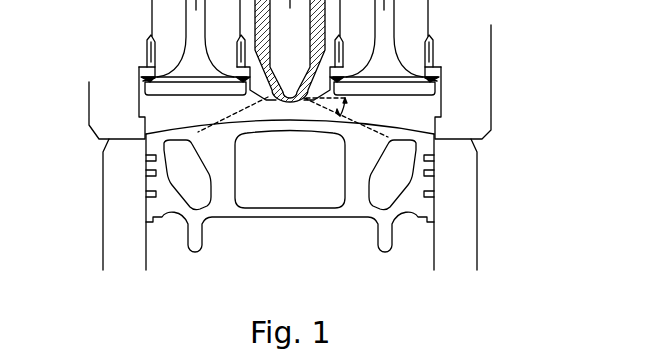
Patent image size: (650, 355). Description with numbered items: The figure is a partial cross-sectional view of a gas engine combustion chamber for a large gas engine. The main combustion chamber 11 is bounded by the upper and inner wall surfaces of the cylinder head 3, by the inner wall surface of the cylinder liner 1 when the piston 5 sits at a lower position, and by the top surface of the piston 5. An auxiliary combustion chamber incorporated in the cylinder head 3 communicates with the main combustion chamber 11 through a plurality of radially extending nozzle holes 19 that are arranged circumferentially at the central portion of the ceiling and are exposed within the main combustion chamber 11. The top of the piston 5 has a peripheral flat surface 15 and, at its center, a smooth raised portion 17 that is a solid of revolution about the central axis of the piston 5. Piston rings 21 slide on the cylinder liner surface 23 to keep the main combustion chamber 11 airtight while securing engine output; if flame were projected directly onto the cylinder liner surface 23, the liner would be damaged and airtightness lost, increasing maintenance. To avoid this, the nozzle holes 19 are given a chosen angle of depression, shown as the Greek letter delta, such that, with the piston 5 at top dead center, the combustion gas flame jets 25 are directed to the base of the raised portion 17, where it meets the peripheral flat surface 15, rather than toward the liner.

The cylinder liner 1 is at (477, 185).
The cylinder head 3 is at (491, 87).
The piston 5 is at (243, 185).
The main combustion chamber 11 is at (152, 113).
The flat surface 15 is at (167, 133).
The smooth raised portion 17 is at (250, 125).
The nozzle holes 19 is at (307, 99).
The piston rings 21 is at (145, 155).
The cylinder liner surface 23 is at (145, 187).
The combustion gas flame jets 25 is at (363, 118).